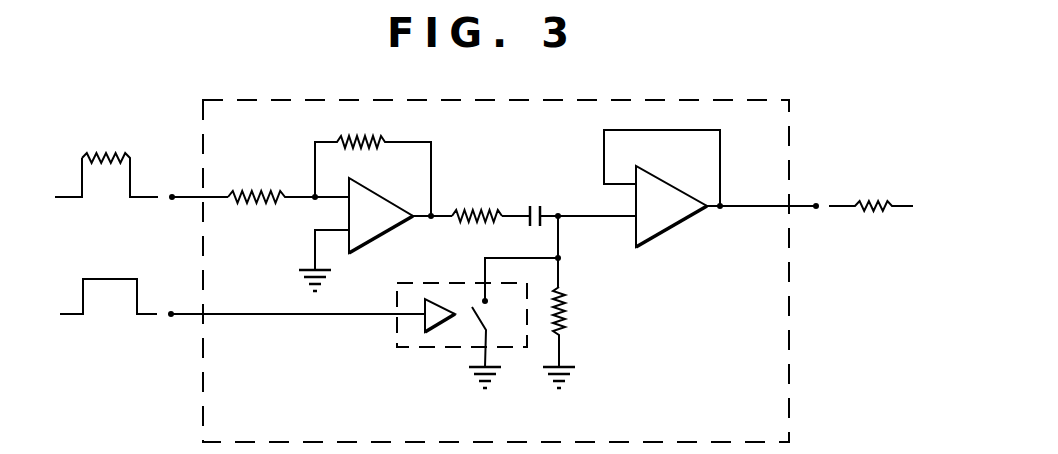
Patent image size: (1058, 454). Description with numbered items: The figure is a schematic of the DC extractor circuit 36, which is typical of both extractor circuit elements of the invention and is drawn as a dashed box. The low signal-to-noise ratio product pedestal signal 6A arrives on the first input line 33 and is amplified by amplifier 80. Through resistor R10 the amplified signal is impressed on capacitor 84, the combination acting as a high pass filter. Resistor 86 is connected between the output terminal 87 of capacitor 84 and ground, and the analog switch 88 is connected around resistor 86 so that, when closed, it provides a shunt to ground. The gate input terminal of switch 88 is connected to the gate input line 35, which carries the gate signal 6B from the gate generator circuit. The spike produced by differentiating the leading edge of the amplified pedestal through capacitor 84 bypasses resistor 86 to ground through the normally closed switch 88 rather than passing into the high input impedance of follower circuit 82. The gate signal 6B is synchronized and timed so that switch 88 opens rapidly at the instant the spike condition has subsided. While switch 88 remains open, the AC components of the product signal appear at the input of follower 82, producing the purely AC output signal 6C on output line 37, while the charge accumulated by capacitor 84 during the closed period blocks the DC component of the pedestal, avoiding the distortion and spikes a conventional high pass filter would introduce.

The product pedestal signal waveform 6A is at (82, 168).
The gate signal waveform 6B is at (103, 278).
The AC output signal waveform 6C is at (868, 201).
The first input line 33 is at (176, 199).
The gate input line 35 is at (174, 317).
The DC extractor circuit 36 is at (744, 101).
The output line 37 is at (800, 205).
The amplifier 80 is at (380, 225).
The follower circuit 82 is at (650, 223).
The capacitor 84 is at (541, 206).
The resistor 86 is at (563, 310).
The output terminal of capacitor 87 is at (560, 214).
The analog switch 88 is at (405, 348).
The resistor R10 is at (470, 207).